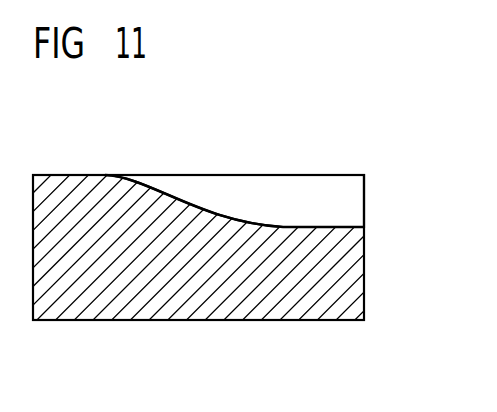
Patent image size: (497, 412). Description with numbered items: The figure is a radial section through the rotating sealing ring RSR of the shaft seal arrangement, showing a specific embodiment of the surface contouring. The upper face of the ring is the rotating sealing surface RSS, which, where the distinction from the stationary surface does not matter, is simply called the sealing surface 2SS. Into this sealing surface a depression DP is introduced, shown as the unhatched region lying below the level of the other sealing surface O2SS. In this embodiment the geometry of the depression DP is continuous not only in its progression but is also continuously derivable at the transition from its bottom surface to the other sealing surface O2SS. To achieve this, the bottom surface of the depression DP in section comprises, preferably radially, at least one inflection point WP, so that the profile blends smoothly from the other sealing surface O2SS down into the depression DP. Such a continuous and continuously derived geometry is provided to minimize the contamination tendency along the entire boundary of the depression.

The rotating sealing ring RSR is at (182, 295).
The inflection point WP is at (188, 204).
The depression DP is at (347, 202).
The other sealing surface O2SS is at (55, 173).
The rotating sealing surface RSS is at (204, 119).
The sealing surface 2SS is at (264, 165).